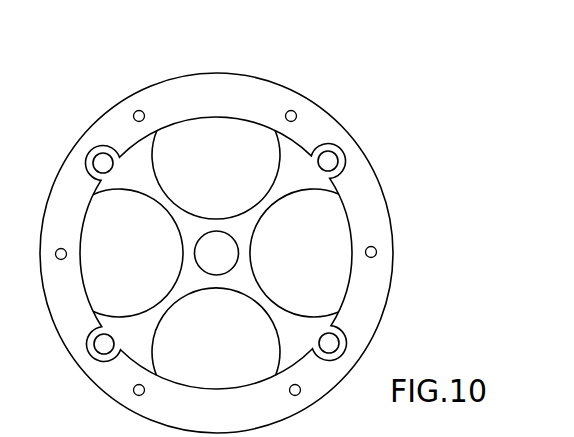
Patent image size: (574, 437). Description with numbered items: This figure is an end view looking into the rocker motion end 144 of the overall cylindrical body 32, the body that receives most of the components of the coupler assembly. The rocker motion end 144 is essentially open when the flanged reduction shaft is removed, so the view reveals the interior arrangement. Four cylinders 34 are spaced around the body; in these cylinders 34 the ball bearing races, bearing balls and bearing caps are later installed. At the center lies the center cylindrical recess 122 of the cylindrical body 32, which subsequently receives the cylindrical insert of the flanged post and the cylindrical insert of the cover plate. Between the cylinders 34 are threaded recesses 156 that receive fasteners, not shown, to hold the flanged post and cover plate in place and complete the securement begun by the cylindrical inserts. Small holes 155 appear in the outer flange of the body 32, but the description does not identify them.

The overall cylindrical body 32 is at (232, 73).
The cylinder 34 is at (162, 181).
The center cylindrical recess 122 is at (238, 252).
The rocker motion end 144 is at (198, 73).
The small holes 155 is at (377, 252).
The threaded recess 156 is at (343, 153).